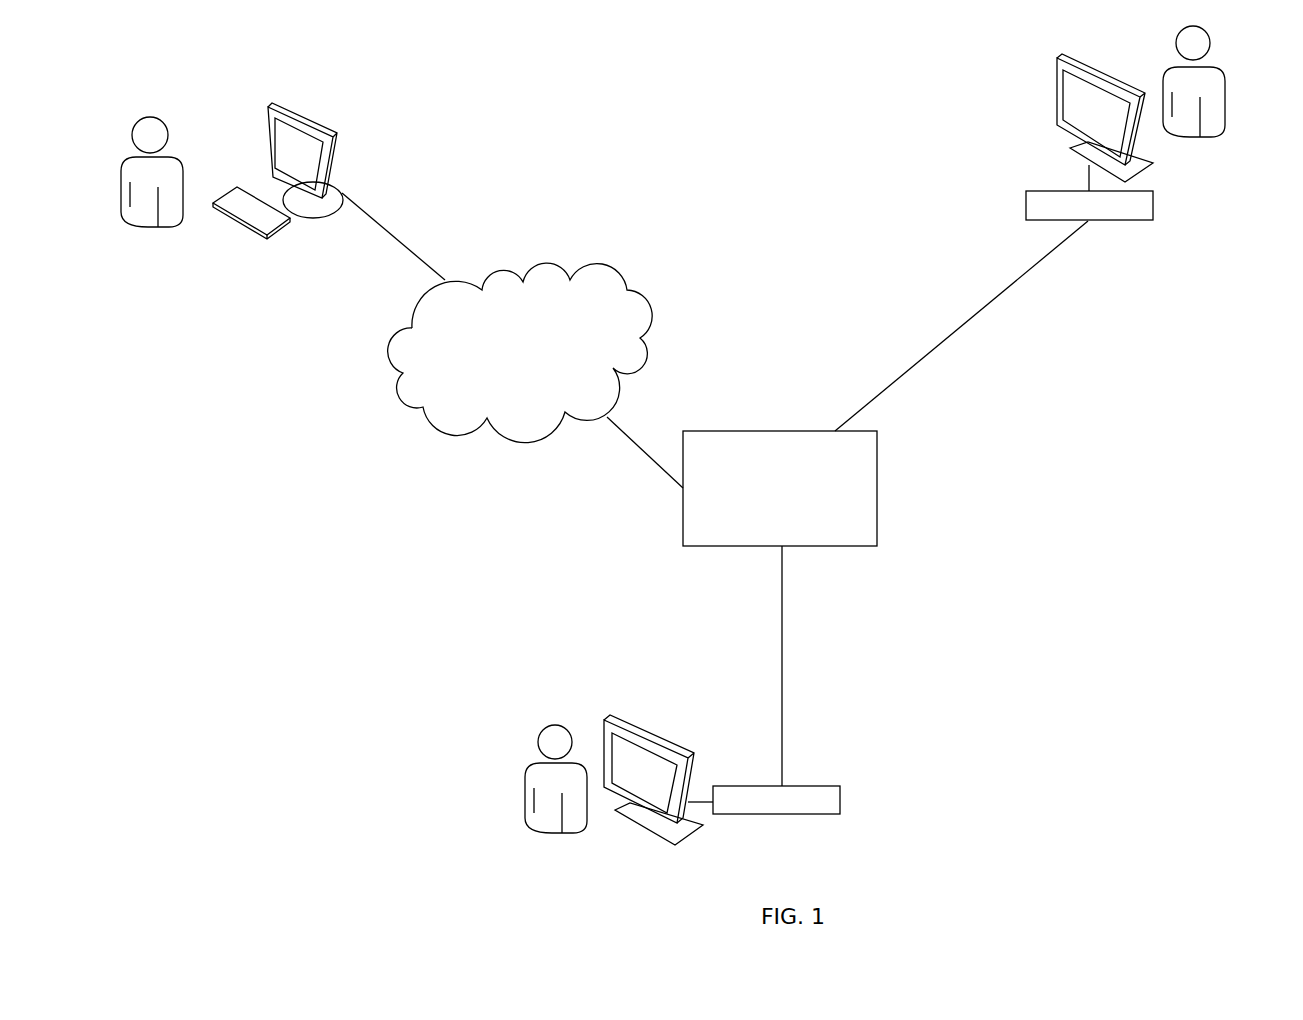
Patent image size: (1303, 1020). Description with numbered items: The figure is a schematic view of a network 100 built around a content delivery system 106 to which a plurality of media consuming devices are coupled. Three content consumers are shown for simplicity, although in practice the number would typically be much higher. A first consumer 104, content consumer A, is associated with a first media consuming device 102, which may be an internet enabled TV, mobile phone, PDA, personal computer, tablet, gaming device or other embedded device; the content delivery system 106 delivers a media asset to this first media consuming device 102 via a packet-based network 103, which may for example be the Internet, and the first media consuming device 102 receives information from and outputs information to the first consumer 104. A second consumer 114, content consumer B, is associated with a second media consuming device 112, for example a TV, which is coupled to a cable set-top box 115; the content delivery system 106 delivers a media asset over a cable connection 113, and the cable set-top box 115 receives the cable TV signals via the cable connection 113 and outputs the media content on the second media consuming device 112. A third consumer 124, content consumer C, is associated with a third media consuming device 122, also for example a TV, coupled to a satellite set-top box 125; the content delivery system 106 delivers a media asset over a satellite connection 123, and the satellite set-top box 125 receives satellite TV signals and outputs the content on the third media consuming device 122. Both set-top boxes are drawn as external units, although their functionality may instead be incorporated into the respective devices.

The network 100 is at (771, 92).
The first media consuming device 102 is at (340, 215).
The packet-based network 103 is at (643, 291).
The first consumer 104 is at (150, 116).
The content delivery system 106 is at (683, 547).
The second media consuming device 112 is at (635, 720).
The cable connection 113 is at (782, 648).
The second consumer 114 is at (525, 800).
The cable set-top box 115 is at (840, 800).
The third media consuming device 122 is at (1085, 60).
The satellite connection 123 is at (960, 328).
The third consumer 124 is at (1225, 100).
The satellite set-top box 125 is at (1155, 208).